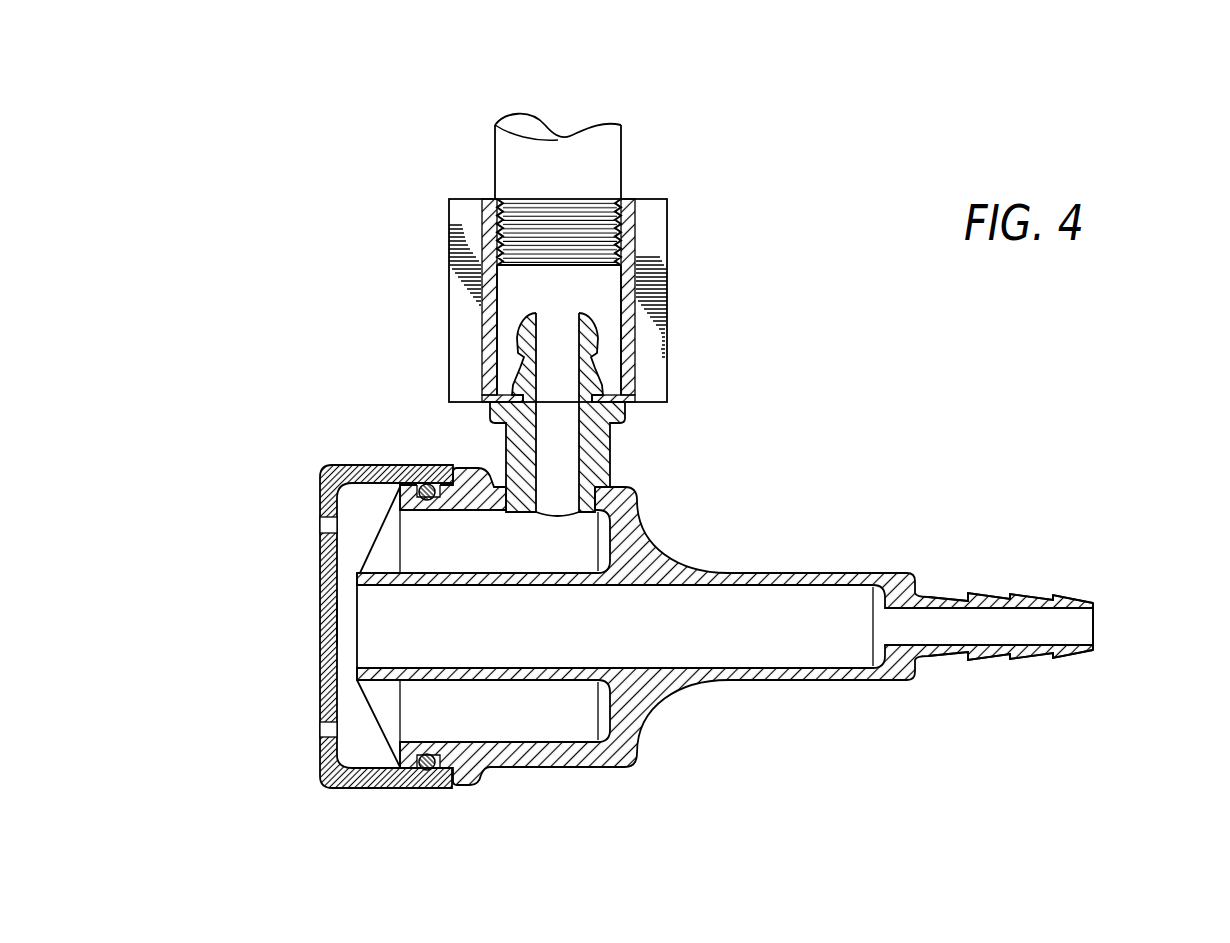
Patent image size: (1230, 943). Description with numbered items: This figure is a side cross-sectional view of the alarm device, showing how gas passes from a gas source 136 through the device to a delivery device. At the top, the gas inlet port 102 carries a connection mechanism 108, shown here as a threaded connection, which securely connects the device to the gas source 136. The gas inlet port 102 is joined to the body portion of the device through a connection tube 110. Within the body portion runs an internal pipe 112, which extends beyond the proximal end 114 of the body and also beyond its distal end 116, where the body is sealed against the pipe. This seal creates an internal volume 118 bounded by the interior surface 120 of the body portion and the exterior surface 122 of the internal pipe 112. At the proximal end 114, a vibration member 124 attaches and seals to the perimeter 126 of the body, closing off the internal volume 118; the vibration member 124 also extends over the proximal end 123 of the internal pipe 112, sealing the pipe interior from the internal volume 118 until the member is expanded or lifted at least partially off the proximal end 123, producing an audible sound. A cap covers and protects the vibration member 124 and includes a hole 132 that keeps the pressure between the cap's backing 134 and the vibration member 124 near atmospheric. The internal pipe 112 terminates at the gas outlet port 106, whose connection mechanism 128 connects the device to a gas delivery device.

The gas inlet port 102 is at (593, 213).
The gas outlet port 106 is at (1087, 628).
The connection mechanism 108 is at (652, 258).
The connection tube 110 is at (593, 455).
The internal pipe 112 is at (502, 676).
The proximal end 114 is at (400, 510).
The distal end 116 is at (653, 533).
The internal volume 118 is at (462, 523).
The interior surface 120 is at (420, 513).
The exterior surface 122 is at (438, 573).
The proximal end 123 is at (368, 585).
The vibration member 124 is at (373, 716).
The perimeter 126 is at (400, 487).
The connection mechanism 128 is at (987, 597).
The hole 132 is at (320, 730).
The backing 134 is at (338, 617).
The gas source 136 is at (505, 153).